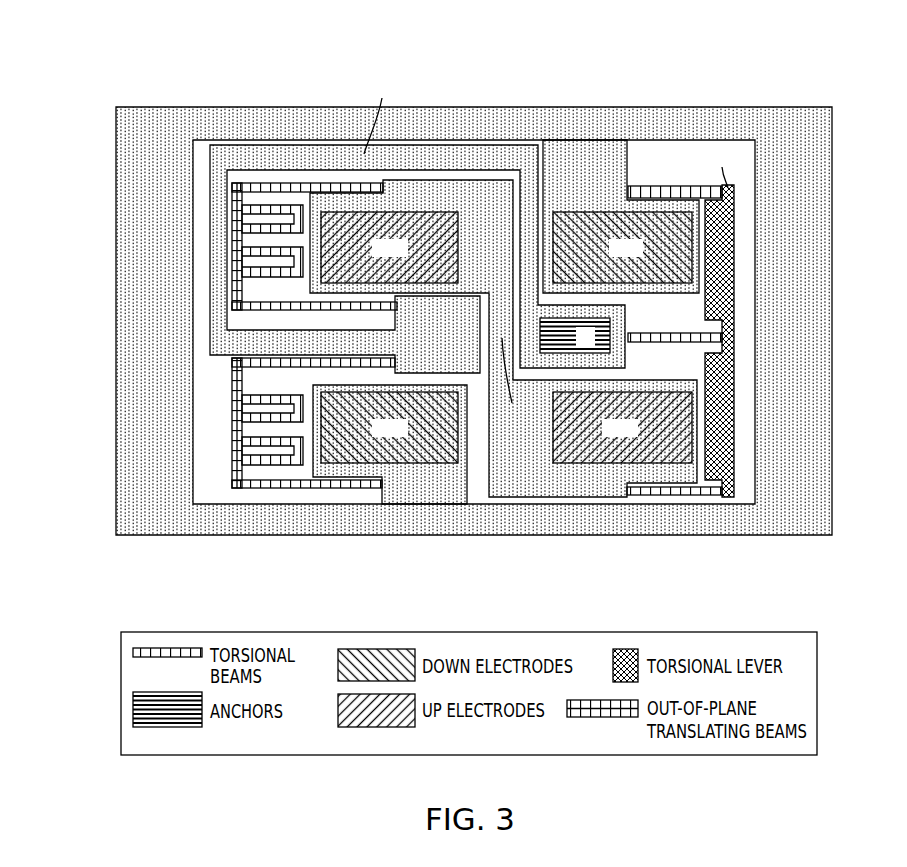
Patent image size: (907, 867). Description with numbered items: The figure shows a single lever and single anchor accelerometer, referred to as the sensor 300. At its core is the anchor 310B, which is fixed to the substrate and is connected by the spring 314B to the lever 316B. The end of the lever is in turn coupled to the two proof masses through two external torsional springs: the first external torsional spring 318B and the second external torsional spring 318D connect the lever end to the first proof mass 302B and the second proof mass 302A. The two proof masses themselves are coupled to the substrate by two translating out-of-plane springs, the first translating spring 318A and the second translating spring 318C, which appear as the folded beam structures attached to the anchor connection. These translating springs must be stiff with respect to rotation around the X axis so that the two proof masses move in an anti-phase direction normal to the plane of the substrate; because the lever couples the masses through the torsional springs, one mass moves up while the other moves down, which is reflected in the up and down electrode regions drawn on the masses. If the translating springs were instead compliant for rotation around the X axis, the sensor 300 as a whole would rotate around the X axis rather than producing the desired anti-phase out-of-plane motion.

The sensor 300 is at (469, 327).
The proof mass PM2 302A is at (118, 318).
The proof mass PM1 302B is at (478, 188).
The anchor A 310B is at (623, 355).
The spring B 314B is at (670, 338).
The lever L 316B is at (728, 385).
The translating spring B11 318A is at (252, 186).
The external torsional spring B21 318B is at (682, 192).
The translating spring B12 318C is at (285, 483).
The external torsional spring B22 318D is at (672, 490).